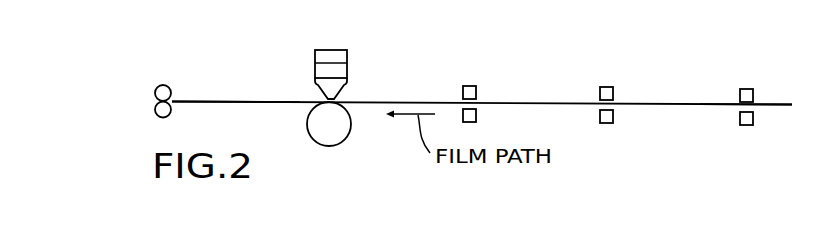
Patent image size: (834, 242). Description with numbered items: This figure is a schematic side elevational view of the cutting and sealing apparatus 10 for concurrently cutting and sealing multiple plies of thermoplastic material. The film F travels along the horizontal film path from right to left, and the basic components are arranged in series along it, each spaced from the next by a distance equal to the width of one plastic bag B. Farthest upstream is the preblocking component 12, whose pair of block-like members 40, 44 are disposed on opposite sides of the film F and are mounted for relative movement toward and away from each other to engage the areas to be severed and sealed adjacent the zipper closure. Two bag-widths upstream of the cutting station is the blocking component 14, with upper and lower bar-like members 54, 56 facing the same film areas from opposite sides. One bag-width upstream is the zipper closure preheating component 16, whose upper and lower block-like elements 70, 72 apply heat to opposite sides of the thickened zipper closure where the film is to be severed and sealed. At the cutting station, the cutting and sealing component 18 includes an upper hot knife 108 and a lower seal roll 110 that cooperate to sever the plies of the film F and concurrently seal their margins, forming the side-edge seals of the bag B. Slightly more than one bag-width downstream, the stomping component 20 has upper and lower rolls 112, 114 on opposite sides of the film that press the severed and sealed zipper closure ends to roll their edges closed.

The cutting and sealing apparatus 10 is at (566, 50).
The preblocking component 12 is at (752, 99).
The blocking component 14 is at (630, 96).
The zipper closure preheating component 16 is at (498, 93).
The cutting and sealing component 18 is at (335, 56).
The stomping component 20 is at (132, 87).
The block-like member 40 is at (754, 97).
The block-like member 44 is at (738, 116).
The upper bar-like member 54 is at (614, 93).
The lower bar-like member 56 is at (614, 117).
The upper block-like element 70 is at (477, 92).
The lower block-like element 72 is at (477, 115).
The upper hot knife 108 is at (327, 68).
The lower seal roll 110 is at (332, 146).
The upper roll 112 is at (155, 91).
The lower roll 114 is at (155, 109).
The plastic bag B is at (213, 101).
The film F is at (772, 105).